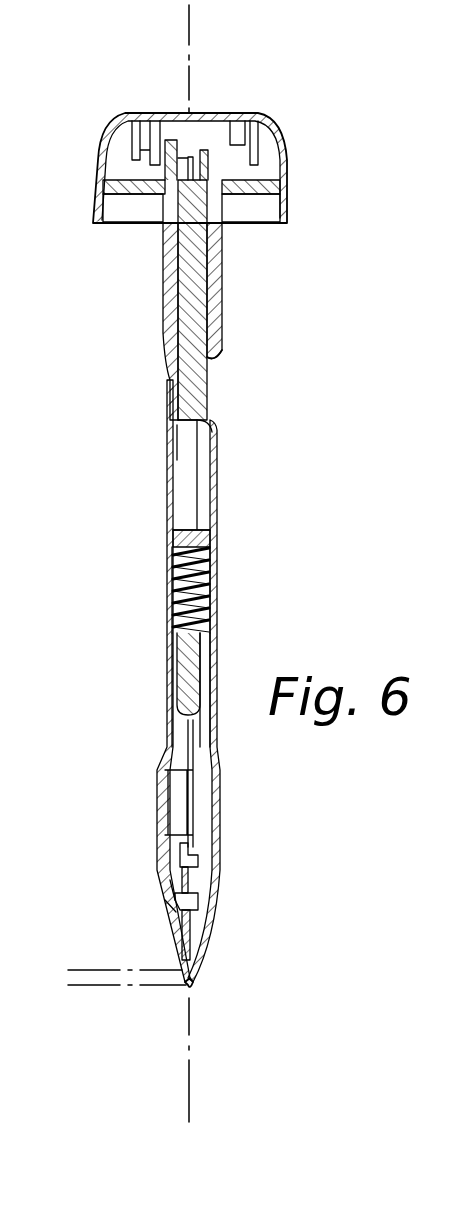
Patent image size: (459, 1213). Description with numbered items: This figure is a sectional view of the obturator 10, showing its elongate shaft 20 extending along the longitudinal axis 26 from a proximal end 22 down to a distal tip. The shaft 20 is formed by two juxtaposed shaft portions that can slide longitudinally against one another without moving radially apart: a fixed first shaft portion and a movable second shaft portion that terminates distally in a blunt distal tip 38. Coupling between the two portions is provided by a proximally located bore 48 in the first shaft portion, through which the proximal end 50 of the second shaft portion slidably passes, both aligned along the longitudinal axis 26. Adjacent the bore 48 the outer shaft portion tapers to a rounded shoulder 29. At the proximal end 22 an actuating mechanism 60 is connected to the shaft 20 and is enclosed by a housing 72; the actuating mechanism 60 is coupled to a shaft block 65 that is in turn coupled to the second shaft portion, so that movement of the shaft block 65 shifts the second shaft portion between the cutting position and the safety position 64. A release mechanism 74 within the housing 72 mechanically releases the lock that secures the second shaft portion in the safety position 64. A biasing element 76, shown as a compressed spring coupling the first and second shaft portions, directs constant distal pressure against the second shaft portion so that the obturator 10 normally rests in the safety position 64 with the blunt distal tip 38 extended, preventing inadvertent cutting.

The obturator 10 is at (305, 275).
The shaft 20 is at (217, 487).
The proximal end 22 is at (160, 238).
The longitudinal axis 26 is at (189, 1090).
The tapered end 29 is at (217, 353).
The blunt distal tip 38 is at (193, 985).
The bore 48 is at (205, 370).
The proximal end of the second shaft portion 50 is at (195, 310).
The actuating mechanism 60 is at (203, 151).
The safety position 64 is at (48, 980).
The shaft block 65 is at (191, 160).
The housing 72 is at (287, 160).
The release mechanism 74 is at (217, 165).
The biasing element 76 is at (175, 590).